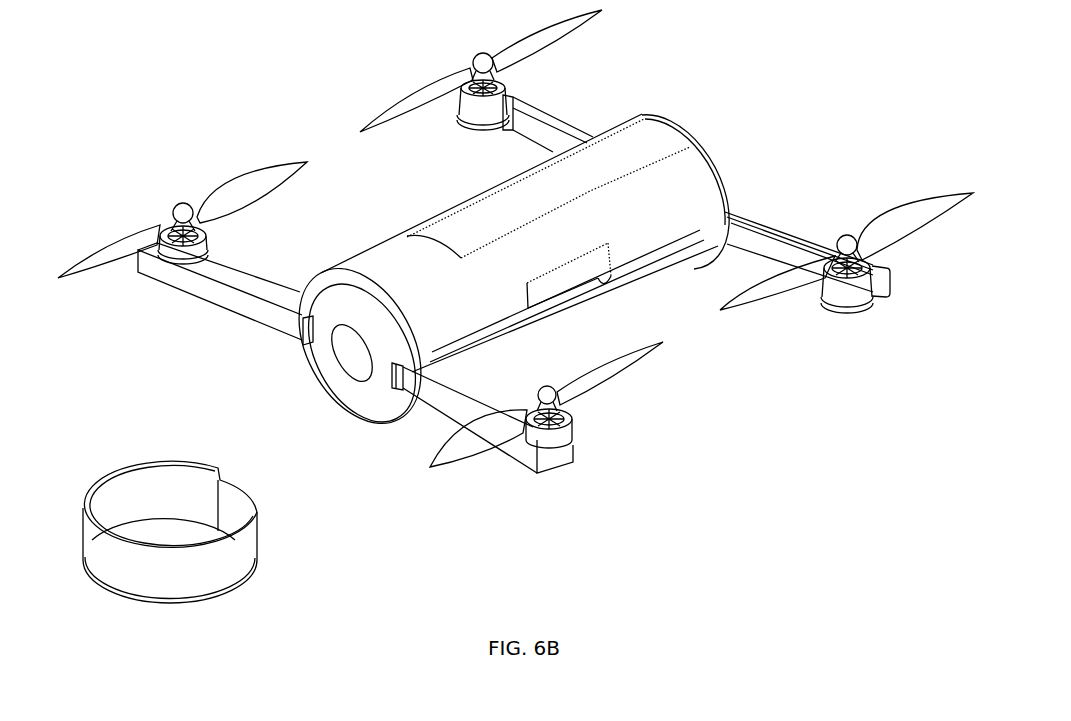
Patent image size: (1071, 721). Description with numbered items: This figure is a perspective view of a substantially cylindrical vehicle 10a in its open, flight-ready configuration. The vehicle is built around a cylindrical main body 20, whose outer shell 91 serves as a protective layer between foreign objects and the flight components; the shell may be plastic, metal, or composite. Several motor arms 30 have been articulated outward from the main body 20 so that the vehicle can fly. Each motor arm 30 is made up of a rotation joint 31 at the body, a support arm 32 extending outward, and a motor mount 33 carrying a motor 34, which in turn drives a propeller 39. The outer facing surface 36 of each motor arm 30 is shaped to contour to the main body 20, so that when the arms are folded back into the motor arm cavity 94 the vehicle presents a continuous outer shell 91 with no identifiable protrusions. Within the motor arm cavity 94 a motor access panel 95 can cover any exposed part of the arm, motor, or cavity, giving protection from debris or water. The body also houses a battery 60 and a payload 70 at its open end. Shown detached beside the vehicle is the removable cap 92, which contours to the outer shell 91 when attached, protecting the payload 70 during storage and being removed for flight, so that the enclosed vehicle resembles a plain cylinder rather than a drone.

The substantially cylindrical vehicle 10a is at (515, 253).
The main body 20 is at (531, 249).
The motor arm 30 is at (720, 169).
The rotation joint 31 is at (351, 419).
The support arm 32 is at (818, 210).
The motor mount 33 is at (846, 276).
The motor 34 is at (591, 424).
The outer facing surface 36 is at (208, 299).
The propeller 39 is at (182, 183).
The battery 60 is at (597, 156).
The payload 70 is at (290, 359).
The outer shell 91 is at (661, 167).
The removable cap 92 is at (242, 540).
The motor arm cavity 94 is at (560, 352).
The motor access panel 95 is at (673, 301).